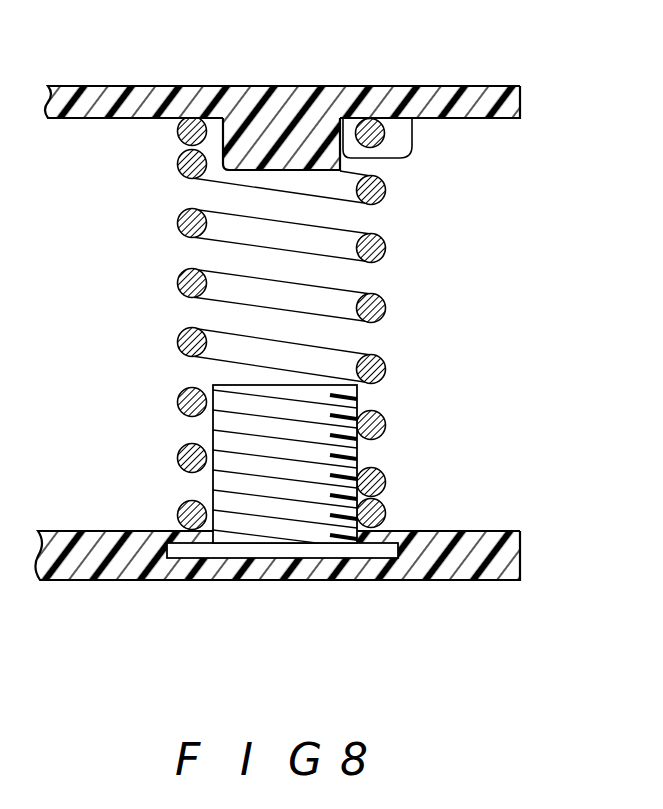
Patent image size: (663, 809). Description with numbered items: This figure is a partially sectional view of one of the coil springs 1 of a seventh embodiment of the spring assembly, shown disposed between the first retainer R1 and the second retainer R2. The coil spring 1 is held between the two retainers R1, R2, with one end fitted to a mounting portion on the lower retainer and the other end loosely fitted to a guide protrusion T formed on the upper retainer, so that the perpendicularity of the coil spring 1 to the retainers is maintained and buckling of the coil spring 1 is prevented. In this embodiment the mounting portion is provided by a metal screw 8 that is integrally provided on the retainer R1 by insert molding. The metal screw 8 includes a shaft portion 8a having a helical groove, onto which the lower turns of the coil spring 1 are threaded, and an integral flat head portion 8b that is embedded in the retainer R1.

The coil spring 1 is at (388, 303).
The metal screw 8 is at (299, 508).
The shaft portion 8a is at (213, 437).
The flat head portion 8b is at (183, 552).
The guide protrusion T is at (409, 152).
The first retainer R1 is at (505, 531).
The second retainer R2 is at (503, 118).